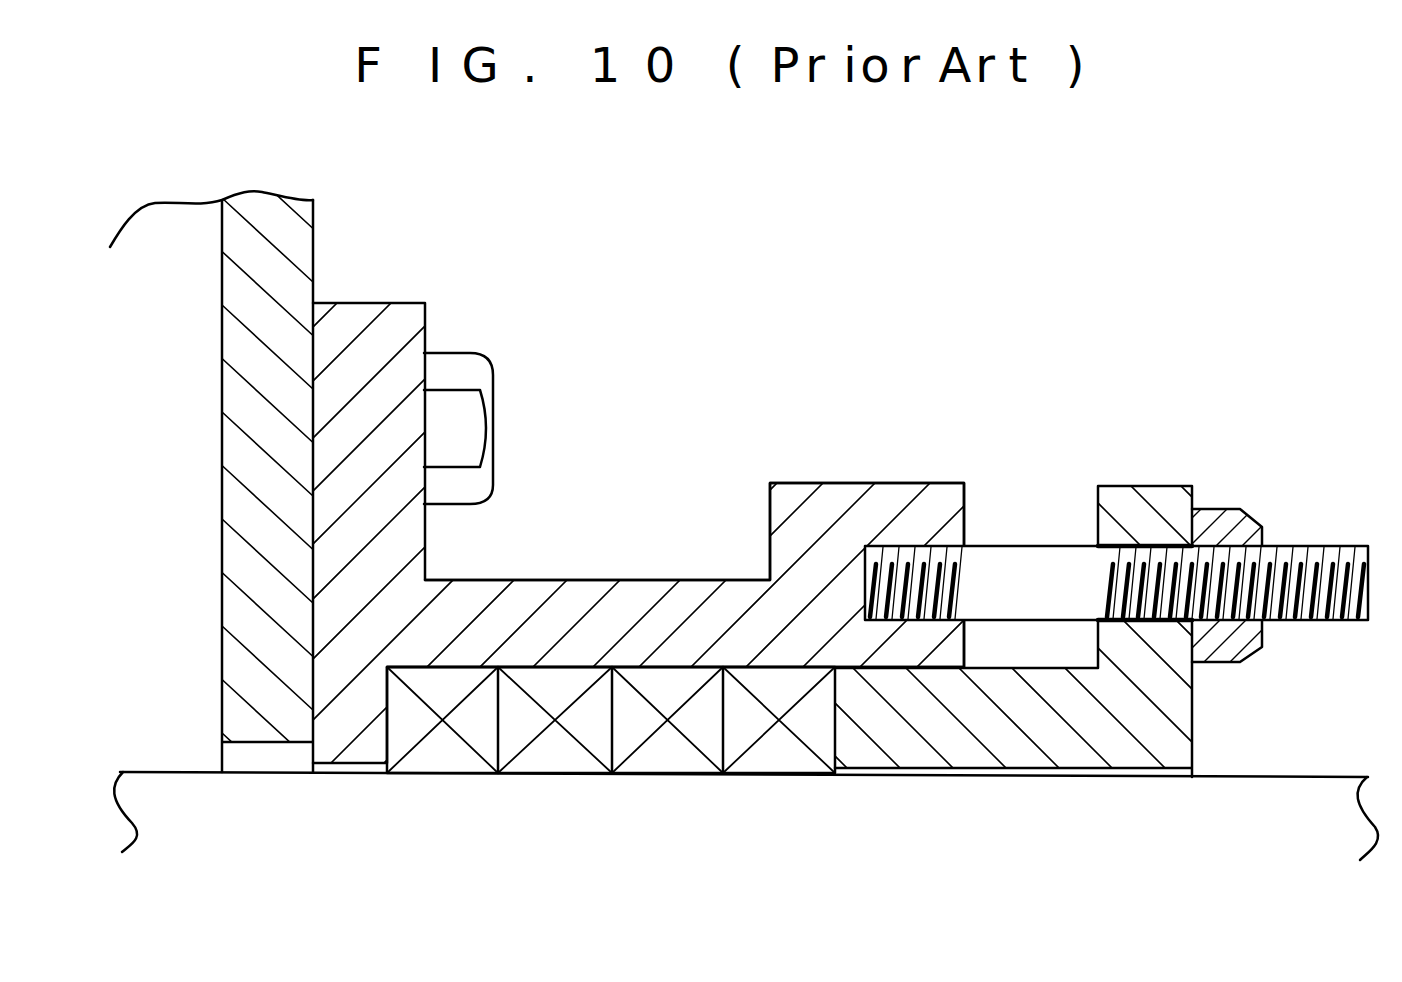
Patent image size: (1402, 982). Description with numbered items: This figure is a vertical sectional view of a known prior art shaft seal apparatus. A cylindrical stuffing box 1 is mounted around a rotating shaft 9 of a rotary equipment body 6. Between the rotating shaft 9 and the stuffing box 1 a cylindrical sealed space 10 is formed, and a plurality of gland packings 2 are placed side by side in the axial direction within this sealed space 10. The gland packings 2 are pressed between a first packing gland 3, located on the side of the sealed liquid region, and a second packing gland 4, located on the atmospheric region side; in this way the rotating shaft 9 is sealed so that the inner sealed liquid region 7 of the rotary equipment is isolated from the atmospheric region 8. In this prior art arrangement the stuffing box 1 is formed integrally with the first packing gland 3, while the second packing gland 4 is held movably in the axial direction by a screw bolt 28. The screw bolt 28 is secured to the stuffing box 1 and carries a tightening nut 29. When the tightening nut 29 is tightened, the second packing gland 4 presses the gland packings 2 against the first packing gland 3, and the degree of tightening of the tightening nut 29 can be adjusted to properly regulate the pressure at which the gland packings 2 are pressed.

The cylindrical stuffing box 1 is at (580, 593).
The gland packings 2 is at (455, 758).
The first packing gland 3 is at (352, 754).
The second packing gland 4 is at (913, 752).
The rotary equipment body 6 is at (282, 270).
The inner sealed liquid region 7 is at (147, 726).
The atmospheric region 8 is at (1247, 757).
The rotating shaft 9 is at (1292, 777).
The cylindrical sealed space 10 is at (600, 724).
The screw bolt 28 is at (1025, 560).
The tightening nut 29 is at (1250, 523).